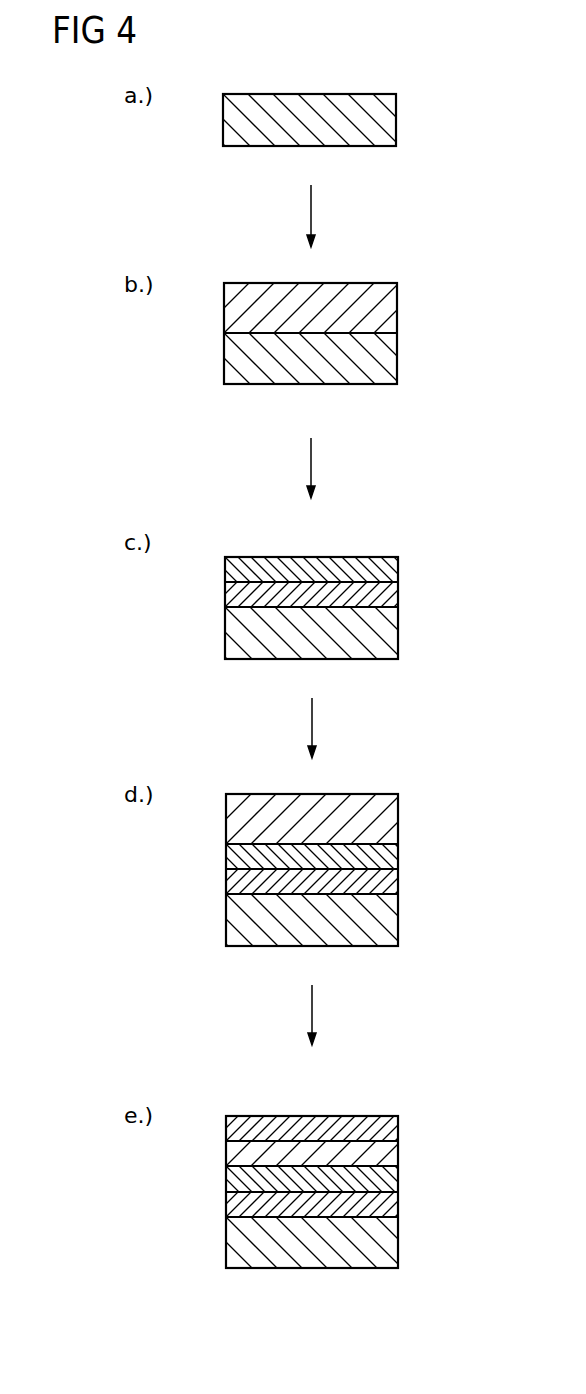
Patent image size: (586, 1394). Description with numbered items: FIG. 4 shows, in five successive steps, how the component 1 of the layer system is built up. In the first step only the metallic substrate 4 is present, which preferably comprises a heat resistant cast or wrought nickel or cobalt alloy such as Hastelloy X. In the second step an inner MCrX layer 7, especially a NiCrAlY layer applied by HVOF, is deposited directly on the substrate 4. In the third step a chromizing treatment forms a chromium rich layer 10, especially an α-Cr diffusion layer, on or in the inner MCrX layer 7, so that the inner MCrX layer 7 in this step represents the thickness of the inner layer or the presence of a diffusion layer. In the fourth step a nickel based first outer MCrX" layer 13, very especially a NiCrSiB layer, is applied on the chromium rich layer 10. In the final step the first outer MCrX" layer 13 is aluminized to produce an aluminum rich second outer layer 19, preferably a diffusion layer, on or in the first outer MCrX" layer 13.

The component 1 is at (203, 118).
The metallic substrate 4 is at (386, 125).
The inner MCrX layer 7 is at (384, 311).
The chromium rich layer 10 is at (393, 571).
The first outer MCrX" layer 13 is at (393, 812).
The second outer layer 19 is at (393, 1133).